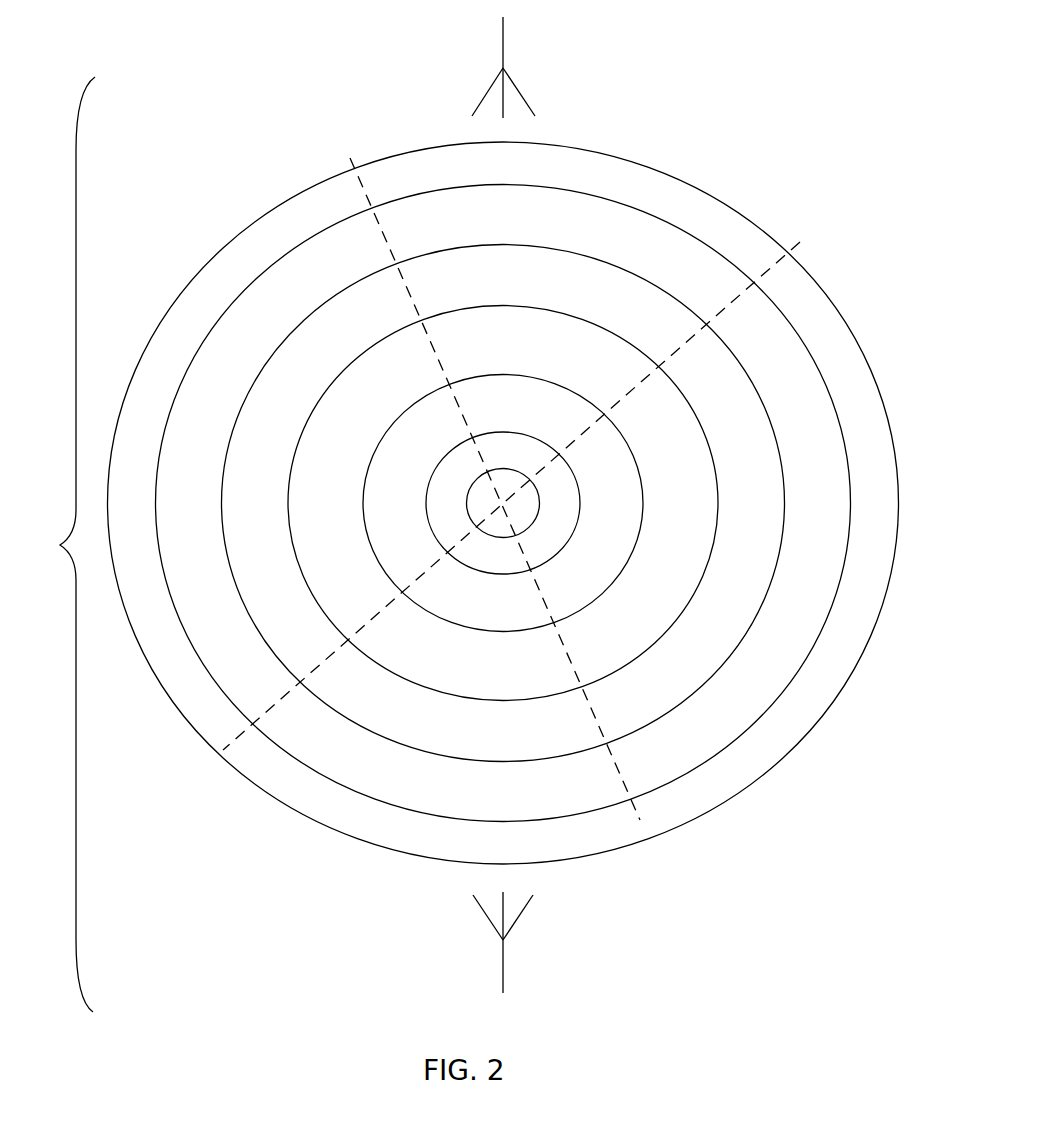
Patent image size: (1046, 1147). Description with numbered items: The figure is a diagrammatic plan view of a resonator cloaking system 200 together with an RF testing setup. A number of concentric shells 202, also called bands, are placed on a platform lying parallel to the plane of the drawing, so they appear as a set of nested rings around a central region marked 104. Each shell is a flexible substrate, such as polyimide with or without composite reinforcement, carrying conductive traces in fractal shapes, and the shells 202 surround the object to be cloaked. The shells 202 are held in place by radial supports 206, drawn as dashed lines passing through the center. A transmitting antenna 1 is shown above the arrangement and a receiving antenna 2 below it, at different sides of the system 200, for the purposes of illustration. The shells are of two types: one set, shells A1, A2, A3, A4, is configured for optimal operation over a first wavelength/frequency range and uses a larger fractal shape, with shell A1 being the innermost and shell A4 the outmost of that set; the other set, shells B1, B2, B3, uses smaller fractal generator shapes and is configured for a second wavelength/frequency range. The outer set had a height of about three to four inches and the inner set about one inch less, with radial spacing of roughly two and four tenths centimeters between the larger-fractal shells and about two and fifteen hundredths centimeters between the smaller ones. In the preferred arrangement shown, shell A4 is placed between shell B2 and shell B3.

The cloaking system 200 is at (204, 62).
The concentric shells 202 is at (58, 544).
The radial supports 206 is at (343, 159).
The central antenna element 104 is at (486, 516).
The transmitting antenna 1 is at (503, 37).
The receiving antenna 2 is at (503, 972).
The shell B1 is at (523, 465).
The shell B2 is at (560, 553).
The shell A1 is at (592, 602).
The shell B3 is at (638, 658).
The shell A2 is at (675, 710).
The shell A3 is at (738, 737).
The shell A4 is at (745, 792).